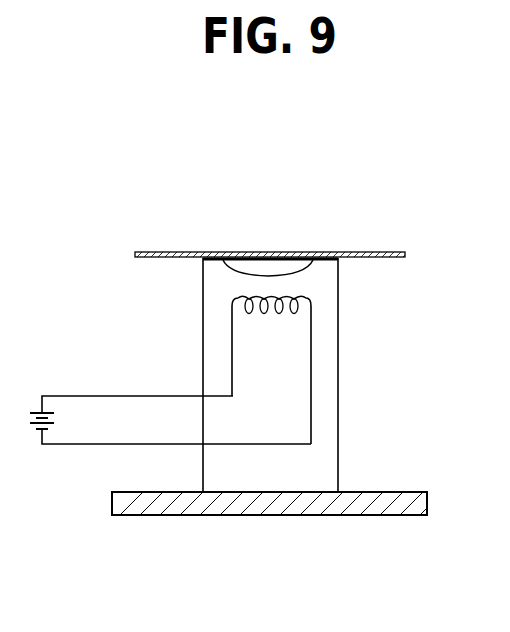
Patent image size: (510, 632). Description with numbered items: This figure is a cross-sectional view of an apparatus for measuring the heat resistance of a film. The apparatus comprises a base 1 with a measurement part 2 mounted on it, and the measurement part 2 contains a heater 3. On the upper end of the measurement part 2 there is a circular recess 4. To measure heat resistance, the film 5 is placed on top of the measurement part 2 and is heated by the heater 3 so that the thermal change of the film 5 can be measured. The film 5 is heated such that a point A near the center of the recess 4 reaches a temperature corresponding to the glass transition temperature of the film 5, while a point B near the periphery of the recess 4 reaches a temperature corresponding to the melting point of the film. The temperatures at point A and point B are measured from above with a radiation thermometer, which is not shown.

The base 1 is at (263, 515).
The measurement part 2 is at (202, 323).
The heater 3 is at (287, 296).
The circular recess 4 is at (255, 272).
The film 5 is at (177, 250).
The point A is at (272, 251).
The point B is at (315, 251).